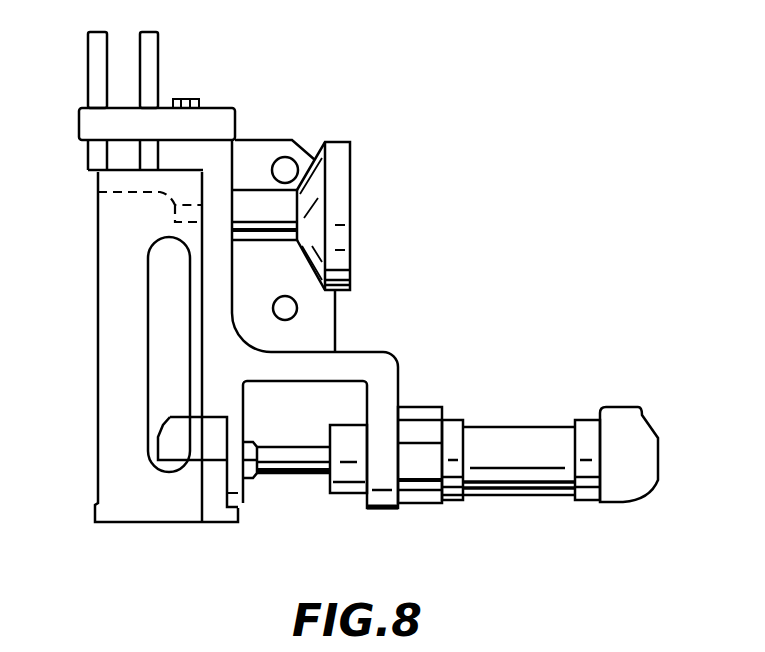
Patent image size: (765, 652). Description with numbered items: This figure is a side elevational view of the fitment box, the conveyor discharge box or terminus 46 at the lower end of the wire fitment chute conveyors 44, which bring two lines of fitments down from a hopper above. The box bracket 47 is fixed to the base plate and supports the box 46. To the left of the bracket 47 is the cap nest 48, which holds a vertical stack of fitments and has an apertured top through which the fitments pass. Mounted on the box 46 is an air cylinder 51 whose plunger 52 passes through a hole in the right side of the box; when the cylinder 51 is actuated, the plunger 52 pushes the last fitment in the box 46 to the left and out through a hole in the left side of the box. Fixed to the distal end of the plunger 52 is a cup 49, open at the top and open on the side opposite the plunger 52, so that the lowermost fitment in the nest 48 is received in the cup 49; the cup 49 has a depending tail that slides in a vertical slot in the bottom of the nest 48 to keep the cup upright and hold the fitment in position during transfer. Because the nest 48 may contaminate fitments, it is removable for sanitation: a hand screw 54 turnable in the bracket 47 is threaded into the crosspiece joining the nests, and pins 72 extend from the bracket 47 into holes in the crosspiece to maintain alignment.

The wire fitment chute conveyor 44 is at (158, 53).
The conveyor discharge box 46 is at (258, 81).
The box bracket 47 is at (260, 152).
The cap nest 48 is at (120, 306).
The cup 49 is at (167, 437).
The air cylinder 51 is at (538, 473).
The plunger 52 is at (297, 457).
The hand screw 54 is at (342, 187).
The pin 72 is at (97, 193).